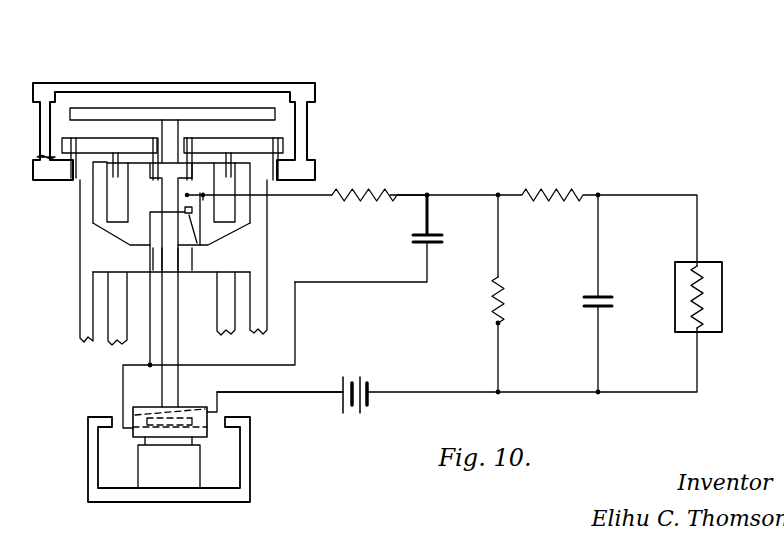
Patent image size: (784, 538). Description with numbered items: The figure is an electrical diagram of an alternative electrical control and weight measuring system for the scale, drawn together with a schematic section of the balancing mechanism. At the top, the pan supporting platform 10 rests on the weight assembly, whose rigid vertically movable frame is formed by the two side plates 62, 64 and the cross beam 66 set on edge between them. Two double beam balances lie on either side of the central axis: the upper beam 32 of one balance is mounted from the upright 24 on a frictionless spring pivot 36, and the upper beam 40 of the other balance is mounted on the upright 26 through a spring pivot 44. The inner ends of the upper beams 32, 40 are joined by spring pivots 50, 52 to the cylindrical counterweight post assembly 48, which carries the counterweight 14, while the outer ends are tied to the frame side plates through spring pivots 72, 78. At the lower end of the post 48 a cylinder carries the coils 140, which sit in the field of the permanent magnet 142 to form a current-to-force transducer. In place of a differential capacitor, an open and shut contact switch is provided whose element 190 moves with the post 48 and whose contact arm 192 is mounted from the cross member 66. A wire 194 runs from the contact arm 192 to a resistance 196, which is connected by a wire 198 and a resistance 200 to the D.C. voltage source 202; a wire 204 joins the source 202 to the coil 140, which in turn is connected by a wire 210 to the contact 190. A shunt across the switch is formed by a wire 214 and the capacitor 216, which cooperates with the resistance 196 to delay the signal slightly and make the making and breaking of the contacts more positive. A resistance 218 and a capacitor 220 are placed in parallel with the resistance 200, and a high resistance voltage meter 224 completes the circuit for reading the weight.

The pan supporting platform 10 is at (137, 83).
The counterweight 14 is at (223, 110).
The upper beam 32 is at (80, 137).
The frictionless spring pivot 36 is at (118, 143).
The frictionless spring pivot 50 is at (153, 137).
The frictionless spring pivot 52 is at (190, 140).
The frictionless spring pivot 44 is at (230, 140).
The upper beam 40 is at (263, 140).
The spring pivot 72 is at (32, 153).
The spring pivot 78 is at (279, 162).
The side plate 62 is at (80, 208).
The side plate 64 is at (263, 214).
The cross beam 66 is at (100, 250).
The contact switch element 192 is at (186, 195).
The contact switch element 190 is at (196, 245).
The upright 24 is at (112, 308).
The upright 26 is at (217, 311).
The cylindrical counterweight post assembly 48 is at (179, 349).
The wire 210 is at (122, 372).
The coils 140 is at (194, 403).
The permanent magnet 142 is at (178, 483).
The wire 194 is at (330, 192).
The resistance 196 is at (380, 192).
The wire 214 is at (432, 228).
The capacitor 216 is at (440, 245).
The wire 198 is at (503, 259).
The resistance 200 is at (492, 325).
The resistance 218 is at (552, 193).
The capacitor 220 is at (590, 305).
The high resistance voltage meter 224 is at (722, 330).
The wire 204 is at (318, 390).
The D.C. voltage source 202 is at (362, 408).